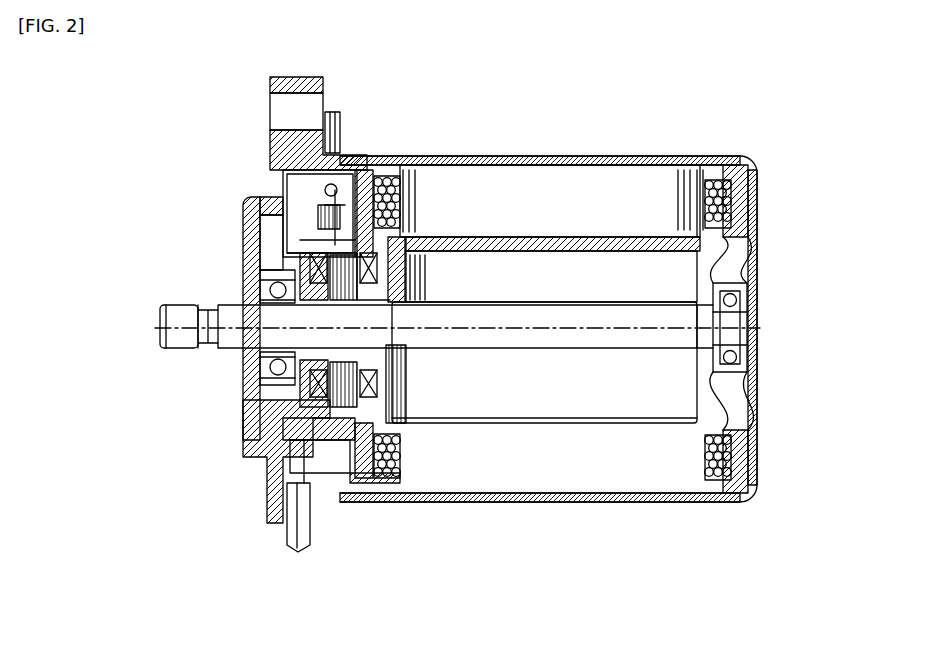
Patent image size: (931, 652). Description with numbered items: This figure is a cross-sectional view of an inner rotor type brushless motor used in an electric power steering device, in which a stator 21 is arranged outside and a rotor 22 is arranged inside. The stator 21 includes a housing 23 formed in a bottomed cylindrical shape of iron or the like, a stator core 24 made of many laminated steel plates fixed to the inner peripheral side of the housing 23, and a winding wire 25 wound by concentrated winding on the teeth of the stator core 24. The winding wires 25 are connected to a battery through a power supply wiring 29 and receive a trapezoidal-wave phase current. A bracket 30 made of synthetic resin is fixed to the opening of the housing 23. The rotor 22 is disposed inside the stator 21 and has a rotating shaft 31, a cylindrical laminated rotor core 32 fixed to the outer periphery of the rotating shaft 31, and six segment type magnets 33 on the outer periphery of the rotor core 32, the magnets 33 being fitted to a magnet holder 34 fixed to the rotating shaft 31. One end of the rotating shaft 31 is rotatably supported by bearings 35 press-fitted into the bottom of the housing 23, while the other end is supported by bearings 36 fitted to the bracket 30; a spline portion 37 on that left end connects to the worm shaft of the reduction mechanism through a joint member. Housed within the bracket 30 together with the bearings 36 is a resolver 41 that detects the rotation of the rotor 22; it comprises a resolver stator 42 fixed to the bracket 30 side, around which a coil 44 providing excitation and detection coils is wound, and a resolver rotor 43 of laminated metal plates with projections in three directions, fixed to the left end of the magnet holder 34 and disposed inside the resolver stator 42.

The stator 21 is at (658, 184).
The rotor 22 is at (593, 401).
The housing 23 is at (760, 170).
The stator core 24 is at (500, 183).
The winding wire 25 is at (385, 158).
The power supply wiring 29 is at (297, 532).
The bracket 30 is at (283, 165).
The rotating shaft 31 is at (232, 345).
The rotor core 32 is at (612, 270).
The magnets 33 is at (528, 262).
The magnet holder 34 is at (413, 237).
The bearings 35 is at (737, 300).
The bearings 36 is at (268, 285).
The spline portion 37 is at (178, 350).
The resolver 41 is at (245, 410).
The resolver stator 42 is at (253, 232).
The resolver rotor 43 is at (385, 340).
The coil 44 is at (385, 380).